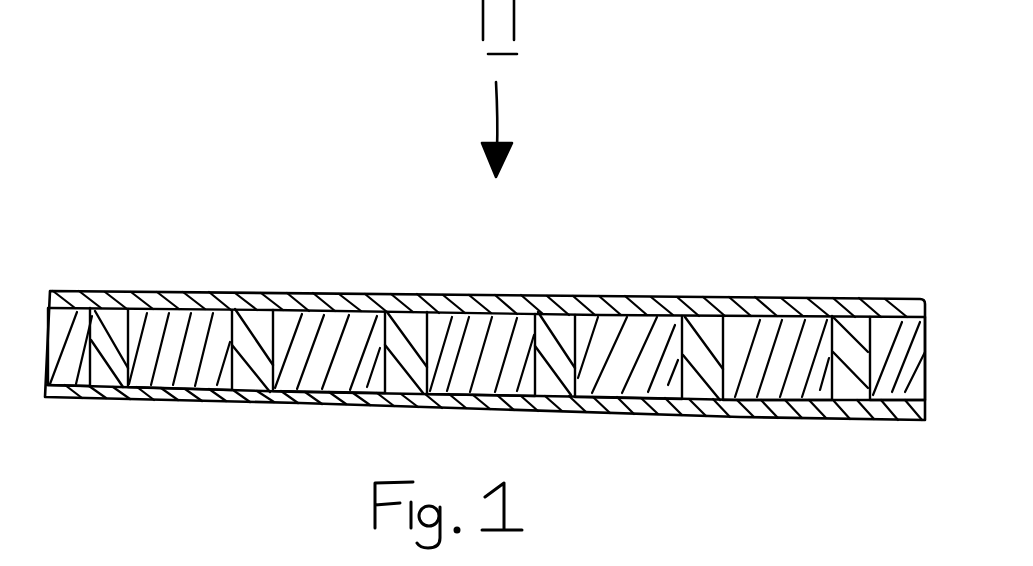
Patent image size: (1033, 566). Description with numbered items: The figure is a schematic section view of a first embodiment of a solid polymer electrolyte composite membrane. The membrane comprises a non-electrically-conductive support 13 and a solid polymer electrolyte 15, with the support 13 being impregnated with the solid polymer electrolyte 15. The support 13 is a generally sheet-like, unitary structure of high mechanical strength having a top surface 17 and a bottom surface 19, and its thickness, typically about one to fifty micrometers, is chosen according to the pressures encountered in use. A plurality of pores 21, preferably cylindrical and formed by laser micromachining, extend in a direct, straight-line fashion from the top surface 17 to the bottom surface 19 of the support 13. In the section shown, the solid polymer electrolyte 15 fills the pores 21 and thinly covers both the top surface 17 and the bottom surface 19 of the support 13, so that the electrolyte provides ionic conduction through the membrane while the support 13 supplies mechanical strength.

The non-electrically-conductive support 13 is at (285, 373).
The solid polymer electrolyte 15 is at (550, 352).
The top surface 17 is at (627, 320).
The bottom surface 19 is at (627, 398).
The pores 21 is at (93, 360).